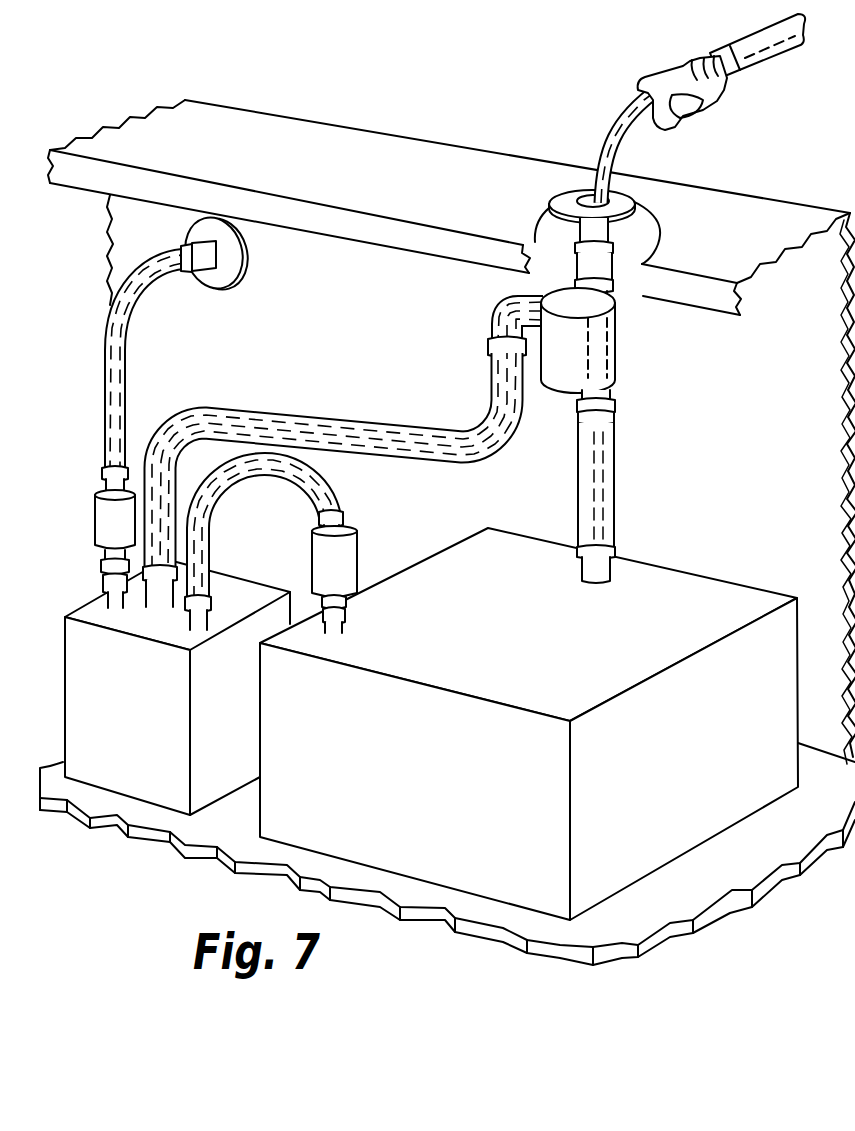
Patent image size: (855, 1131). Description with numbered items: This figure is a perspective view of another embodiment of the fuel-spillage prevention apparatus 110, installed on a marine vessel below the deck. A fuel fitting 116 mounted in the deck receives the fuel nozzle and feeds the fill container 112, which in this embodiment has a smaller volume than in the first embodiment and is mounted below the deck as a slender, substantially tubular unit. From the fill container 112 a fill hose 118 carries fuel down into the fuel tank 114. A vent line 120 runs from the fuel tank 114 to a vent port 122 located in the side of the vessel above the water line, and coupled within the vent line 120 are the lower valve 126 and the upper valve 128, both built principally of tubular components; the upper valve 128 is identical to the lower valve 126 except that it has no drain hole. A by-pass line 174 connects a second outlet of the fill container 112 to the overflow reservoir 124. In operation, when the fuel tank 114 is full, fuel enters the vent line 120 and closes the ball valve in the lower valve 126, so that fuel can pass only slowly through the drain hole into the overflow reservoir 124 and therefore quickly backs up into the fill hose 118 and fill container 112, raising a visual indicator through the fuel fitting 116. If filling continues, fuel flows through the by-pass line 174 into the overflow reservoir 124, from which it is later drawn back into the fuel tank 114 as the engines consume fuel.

The apparatus 110 is at (649, 332).
The fill container 112 is at (613, 370).
The fuel tank 114 is at (722, 575).
The fuel fitting 116 is at (562, 181).
The fill hose 118 is at (617, 480).
The vent line 120 is at (137, 325).
The vent port 122 is at (232, 262).
The overflow reservoir 124 is at (127, 773).
The lower valve 126 is at (357, 560).
The upper valve 128 is at (92, 500).
The by-pass line 174 is at (358, 418).